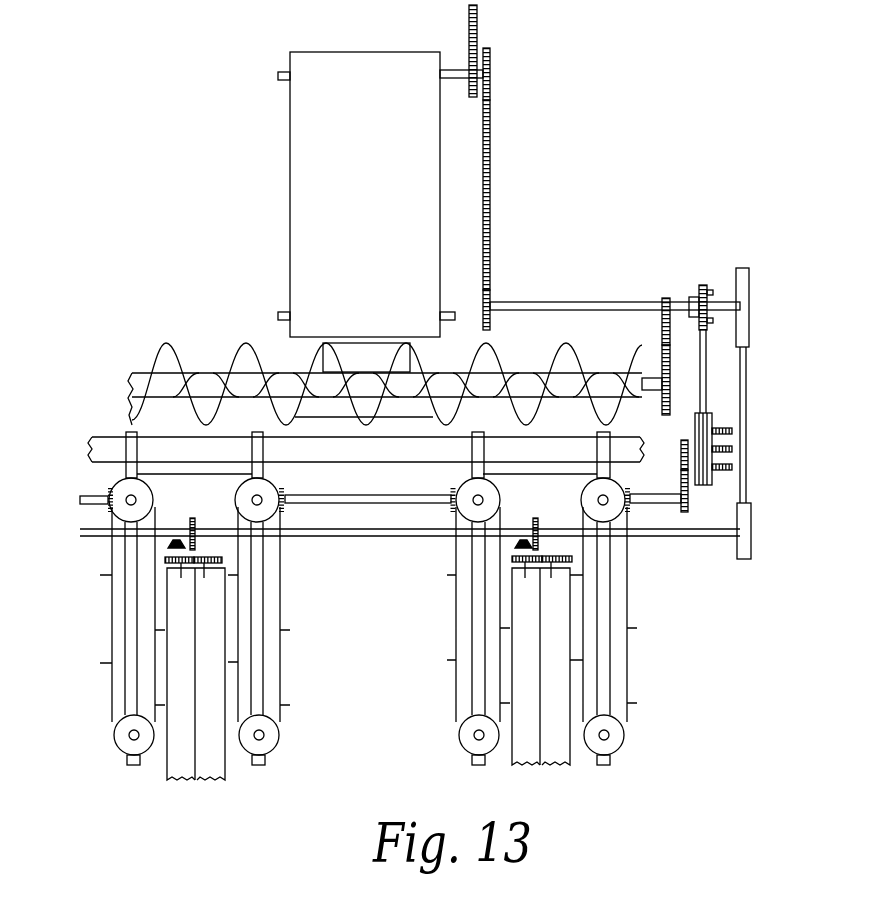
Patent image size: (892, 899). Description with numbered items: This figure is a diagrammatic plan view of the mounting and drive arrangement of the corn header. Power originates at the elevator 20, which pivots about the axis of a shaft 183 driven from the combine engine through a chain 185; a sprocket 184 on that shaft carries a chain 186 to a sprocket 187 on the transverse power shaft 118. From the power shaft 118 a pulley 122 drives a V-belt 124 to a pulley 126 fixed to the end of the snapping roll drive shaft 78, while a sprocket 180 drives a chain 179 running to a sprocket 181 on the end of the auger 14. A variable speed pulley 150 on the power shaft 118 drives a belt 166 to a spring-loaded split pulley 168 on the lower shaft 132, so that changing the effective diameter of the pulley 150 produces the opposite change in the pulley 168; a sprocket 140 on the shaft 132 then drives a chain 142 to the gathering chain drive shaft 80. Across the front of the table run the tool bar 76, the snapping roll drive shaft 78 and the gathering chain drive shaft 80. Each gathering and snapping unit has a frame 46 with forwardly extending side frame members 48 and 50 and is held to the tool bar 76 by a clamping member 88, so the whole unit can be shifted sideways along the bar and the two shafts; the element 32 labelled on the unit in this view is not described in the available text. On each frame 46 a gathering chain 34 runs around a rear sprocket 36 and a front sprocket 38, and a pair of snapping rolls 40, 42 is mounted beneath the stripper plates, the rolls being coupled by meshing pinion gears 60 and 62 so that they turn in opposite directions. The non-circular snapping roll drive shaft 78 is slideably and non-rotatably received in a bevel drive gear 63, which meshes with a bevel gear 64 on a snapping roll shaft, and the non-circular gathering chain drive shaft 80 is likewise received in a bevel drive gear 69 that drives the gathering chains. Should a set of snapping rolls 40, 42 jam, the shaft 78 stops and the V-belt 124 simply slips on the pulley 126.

The auger 14 is at (238, 355).
The elevator 20 is at (308, 198).
The frame channel member 32 is at (287, 632).
The gathering chain 34 is at (112, 603).
The rear sprocket 36 is at (120, 507).
The front sprocket 38 is at (118, 739).
The snapping roll 40 is at (178, 772).
The snapping roll 42 is at (212, 772).
The frame 46 is at (126, 642).
The side frame member 48 is at (263, 680).
The side frame member 50 is at (128, 688).
The pinion gear 60 is at (181, 578).
The pinion gear 62 is at (204, 578).
The bevel drive gear 63 is at (196, 527).
The bevel gear 64 is at (178, 544).
The bevel drive gear 69 is at (108, 490).
The tool bar 76 is at (103, 443).
The snapping roll drive shaft 78 is at (373, 538).
The gathering chain drive shaft 80 is at (386, 495).
The clamping member 88 is at (135, 444).
The power shaft 118 is at (582, 302).
The pulley 122 is at (751, 285).
The V-belt 124 is at (747, 371).
The pulley 126 is at (752, 545).
The shaft 132 is at (694, 436).
The sprocket 140 is at (681, 455).
The chain 142 is at (681, 474).
The variable speed pulley 150 is at (705, 285).
The belt 166 is at (701, 373).
The split pulley 168 is at (718, 420).
The chain 179 is at (661, 338).
The sprocket 180 is at (664, 298).
The sprocket 181 is at (669, 402).
The shaft 183 is at (454, 70).
The sprocket 184 is at (491, 62).
The chain 185 is at (478, 24).
The chain 186 is at (491, 188).
The sprocket 187 is at (492, 300).